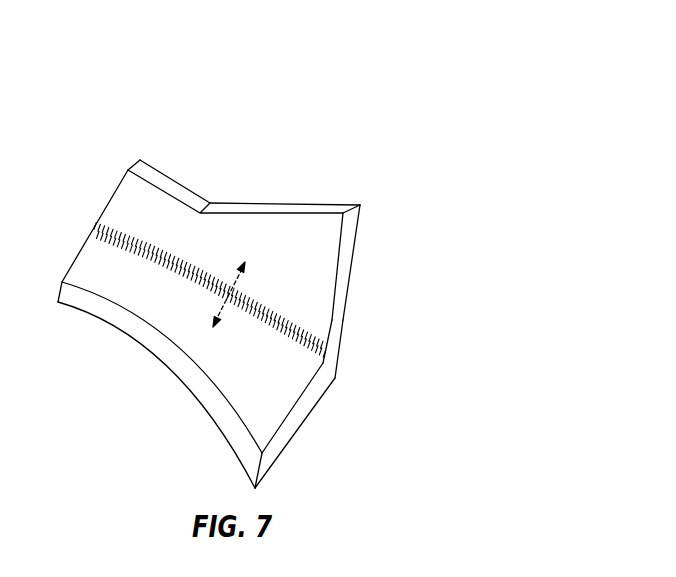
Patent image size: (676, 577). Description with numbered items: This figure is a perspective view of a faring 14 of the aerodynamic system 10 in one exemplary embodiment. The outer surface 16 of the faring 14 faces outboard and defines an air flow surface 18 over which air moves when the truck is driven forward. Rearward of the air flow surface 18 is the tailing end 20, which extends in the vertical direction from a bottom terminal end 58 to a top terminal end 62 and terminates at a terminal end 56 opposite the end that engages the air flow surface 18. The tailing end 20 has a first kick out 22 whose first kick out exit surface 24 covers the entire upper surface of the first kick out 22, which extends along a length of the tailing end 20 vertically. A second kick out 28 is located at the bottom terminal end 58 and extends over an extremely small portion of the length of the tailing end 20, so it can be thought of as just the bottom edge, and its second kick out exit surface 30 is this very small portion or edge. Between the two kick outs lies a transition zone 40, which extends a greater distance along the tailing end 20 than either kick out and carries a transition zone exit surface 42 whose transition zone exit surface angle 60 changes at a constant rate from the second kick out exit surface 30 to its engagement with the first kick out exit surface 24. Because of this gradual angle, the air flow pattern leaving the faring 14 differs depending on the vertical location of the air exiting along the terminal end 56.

The aerodynamic system 10 is at (403, 63).
The faring 14 is at (128, 128).
The outer surface 16 is at (96, 263).
The air flow surface 18 is at (273, 393).
The tailing end 20 is at (103, 210).
The first kick out 22 is at (128, 181).
The first kick out exit surface 24 is at (148, 212).
The second kick out 28 is at (360, 217).
The second kick out exit surface 30 is at (335, 325).
The transition zone 40 is at (240, 227).
The transition zone exit surface 42 is at (288, 236).
The terminal end 56 is at (333, 207).
The bottom terminal end 58 is at (343, 278).
The transition zone exit surface angle 60 is at (222, 290).
The top terminal end 62 is at (110, 200).